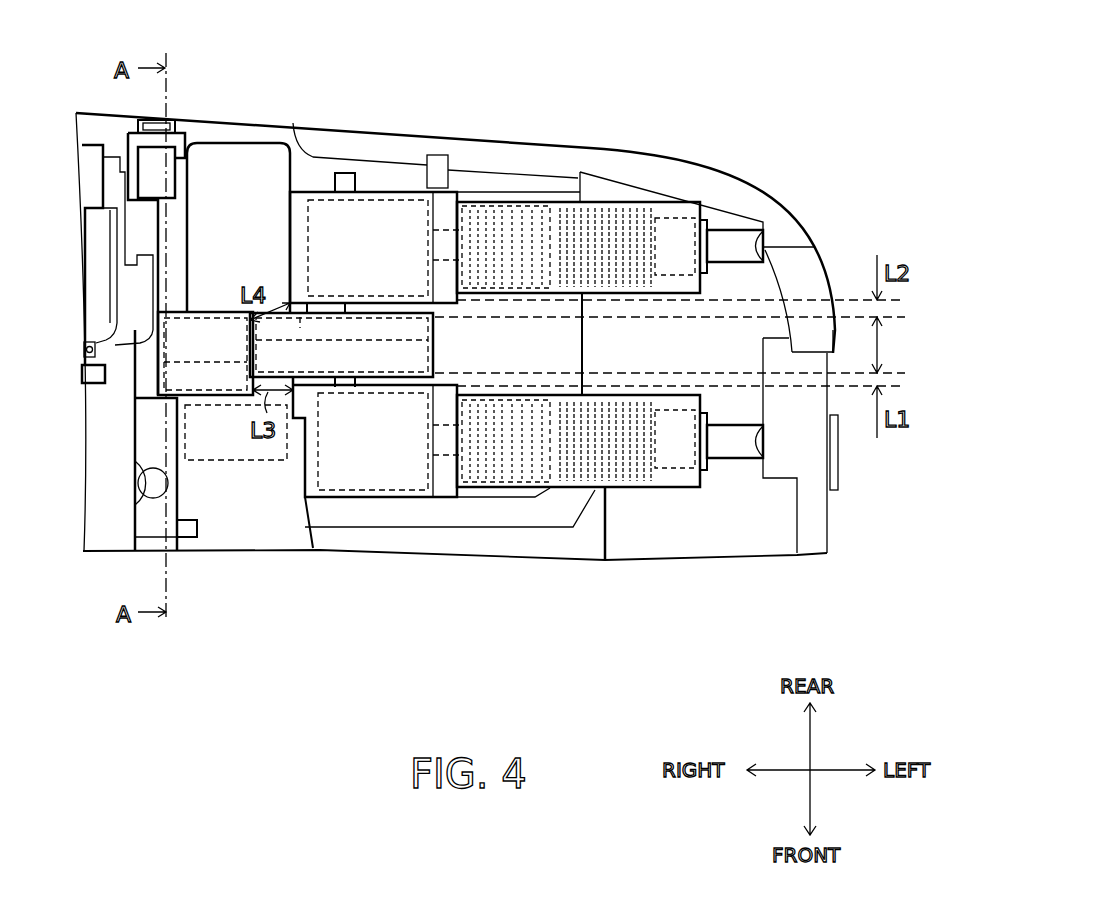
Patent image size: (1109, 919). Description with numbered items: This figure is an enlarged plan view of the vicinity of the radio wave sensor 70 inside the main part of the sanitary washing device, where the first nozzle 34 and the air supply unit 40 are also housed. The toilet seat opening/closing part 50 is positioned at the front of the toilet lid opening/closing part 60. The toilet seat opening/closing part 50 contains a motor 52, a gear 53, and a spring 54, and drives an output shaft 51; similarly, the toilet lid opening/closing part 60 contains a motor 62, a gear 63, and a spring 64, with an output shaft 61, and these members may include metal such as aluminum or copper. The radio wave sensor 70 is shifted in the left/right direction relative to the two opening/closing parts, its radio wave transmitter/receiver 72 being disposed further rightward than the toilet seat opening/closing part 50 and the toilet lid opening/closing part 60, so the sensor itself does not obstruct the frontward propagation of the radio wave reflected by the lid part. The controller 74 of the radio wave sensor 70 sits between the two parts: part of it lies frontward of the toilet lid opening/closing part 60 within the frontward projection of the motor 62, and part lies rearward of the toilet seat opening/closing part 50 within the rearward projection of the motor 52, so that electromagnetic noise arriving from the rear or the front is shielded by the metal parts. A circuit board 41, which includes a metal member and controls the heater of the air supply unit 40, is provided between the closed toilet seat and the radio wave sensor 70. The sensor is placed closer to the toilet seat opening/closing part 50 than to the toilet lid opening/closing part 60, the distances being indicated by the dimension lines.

The first nozzle 34 is at (106, 528).
The air supply unit 40 is at (229, 513).
The circuit board 41 is at (257, 452).
The toilet seat opening/closing part 50 is at (528, 547).
The first output shaft 51 is at (716, 538).
The motor 52 is at (375, 452).
The gear 53 is at (508, 487).
The spring 54 is at (612, 472).
The toilet lid opening/closing part 60 is at (526, 160).
The second output shaft 61 is at (725, 167).
The motor 62 is at (385, 220).
The gear 63 is at (498, 205).
The spring 64 is at (618, 205).
The radio wave sensor 70 is at (295, 201).
The radio wave transmitter/receiver 72 is at (210, 337).
The controller 74 is at (300, 327).